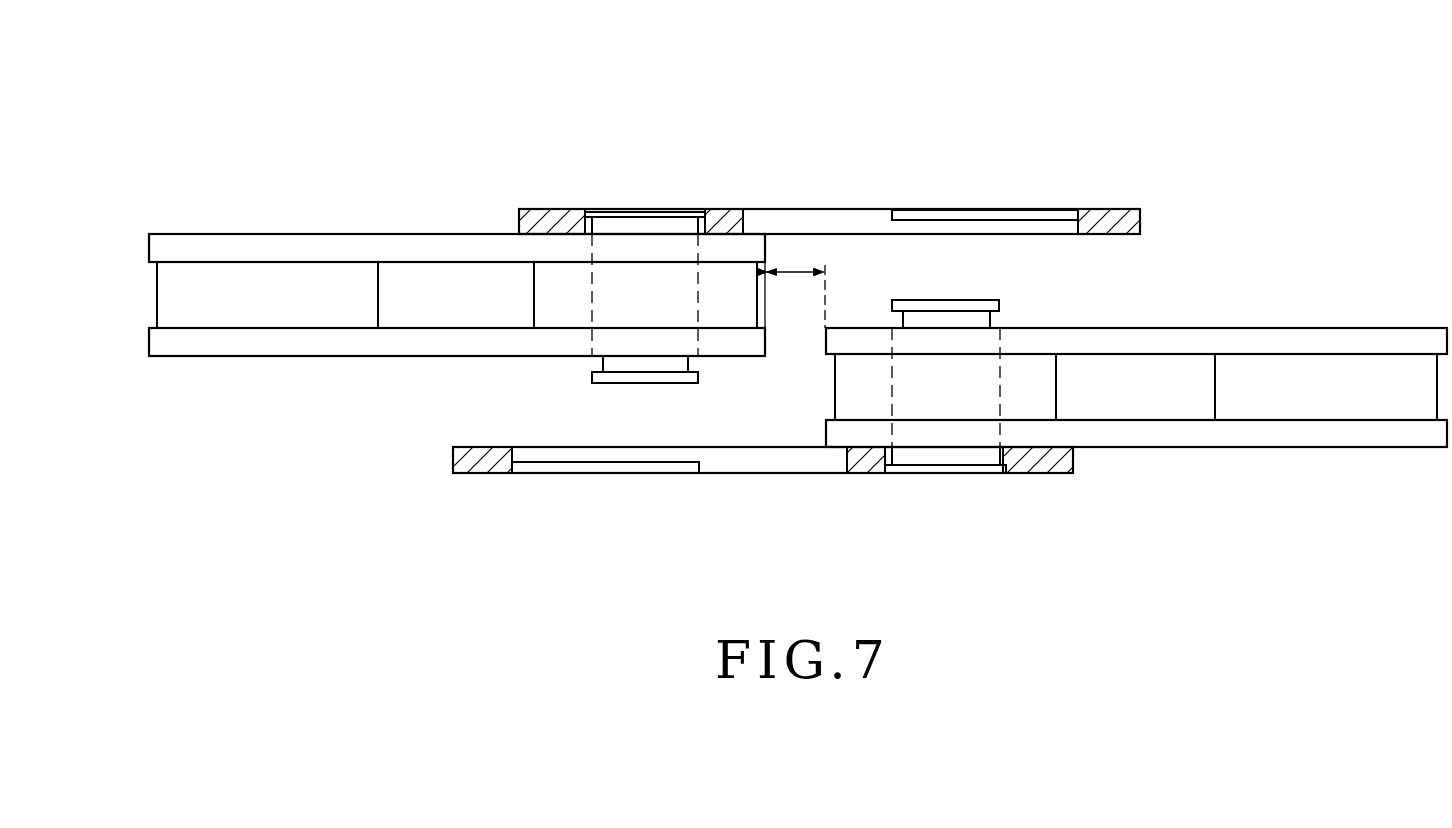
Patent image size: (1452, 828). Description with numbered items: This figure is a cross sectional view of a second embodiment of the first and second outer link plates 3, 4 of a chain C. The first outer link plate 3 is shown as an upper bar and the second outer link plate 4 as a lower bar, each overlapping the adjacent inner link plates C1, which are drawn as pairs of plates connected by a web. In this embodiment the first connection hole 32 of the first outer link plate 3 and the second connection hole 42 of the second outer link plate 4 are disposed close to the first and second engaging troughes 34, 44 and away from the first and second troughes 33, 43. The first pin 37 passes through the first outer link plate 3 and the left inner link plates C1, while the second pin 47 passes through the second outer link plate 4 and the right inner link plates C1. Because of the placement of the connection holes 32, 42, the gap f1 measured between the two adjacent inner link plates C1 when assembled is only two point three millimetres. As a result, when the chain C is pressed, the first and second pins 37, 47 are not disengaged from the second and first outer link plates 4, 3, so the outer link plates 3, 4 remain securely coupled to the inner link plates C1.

The chain C is at (278, 280).
The inner link plates C1 is at (202, 245).
The first outer link plate 3 is at (732, 222).
The first connection hole 32 is at (787, 223).
The first trough 33 is at (742, 222).
The first engaging trough 34 is at (1058, 222).
The first pin 37 is at (633, 243).
The gap f1 is at (795, 295).
The second outer link plate 4 is at (1050, 460).
The second connection hole 42 is at (748, 462).
The second trough 43 is at (845, 460).
The second engaging trough 44 is at (512, 458).
The second pin 47 is at (952, 405).